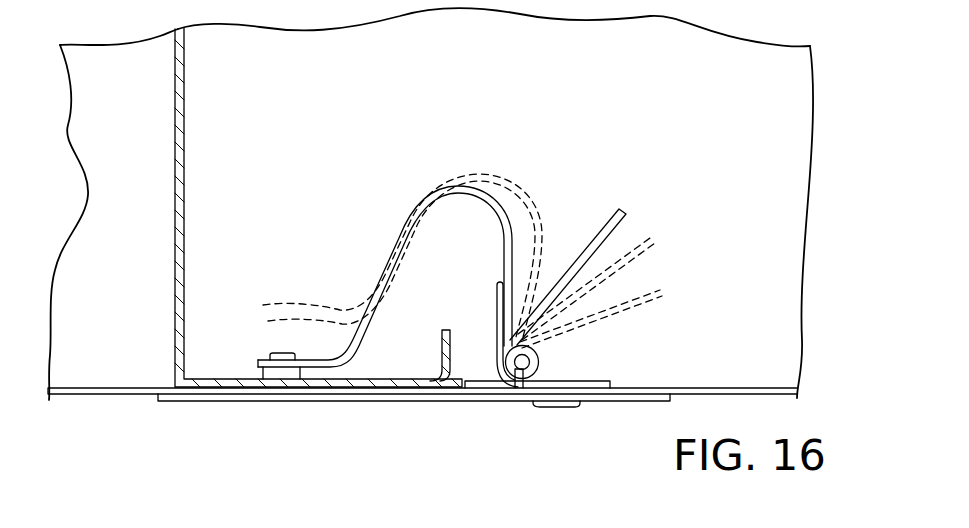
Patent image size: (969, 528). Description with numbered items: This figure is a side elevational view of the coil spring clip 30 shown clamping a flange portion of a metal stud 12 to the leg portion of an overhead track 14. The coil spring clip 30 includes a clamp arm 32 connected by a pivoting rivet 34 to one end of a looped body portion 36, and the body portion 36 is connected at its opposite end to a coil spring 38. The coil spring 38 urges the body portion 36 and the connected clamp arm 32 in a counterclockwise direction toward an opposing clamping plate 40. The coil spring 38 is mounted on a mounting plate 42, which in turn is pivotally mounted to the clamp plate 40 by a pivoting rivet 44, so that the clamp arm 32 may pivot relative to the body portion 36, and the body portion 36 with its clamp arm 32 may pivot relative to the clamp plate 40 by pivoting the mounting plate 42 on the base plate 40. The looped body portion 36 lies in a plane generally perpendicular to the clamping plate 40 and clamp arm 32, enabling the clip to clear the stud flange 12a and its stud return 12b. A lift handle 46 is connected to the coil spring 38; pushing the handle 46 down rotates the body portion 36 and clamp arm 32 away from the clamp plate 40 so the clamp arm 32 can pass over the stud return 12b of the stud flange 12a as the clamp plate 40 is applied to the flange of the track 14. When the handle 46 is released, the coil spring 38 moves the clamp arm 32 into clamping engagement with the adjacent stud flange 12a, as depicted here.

The metal stud 12 is at (192, 156).
The stud flange 12a is at (375, 379).
The stud return 12b is at (453, 347).
The track 14 is at (86, 180).
The coil spring clip 30 is at (562, 176).
The clamp arm 32 is at (260, 368).
The pivoting rivet 34 is at (285, 353).
The looped body portion 36 is at (422, 197).
The coil spring 38 is at (532, 347).
The clamping plate 40 is at (203, 402).
The mounting plate 42 is at (577, 380).
The pivoting rivet 44 is at (548, 408).
The lift handle 46 is at (600, 242).